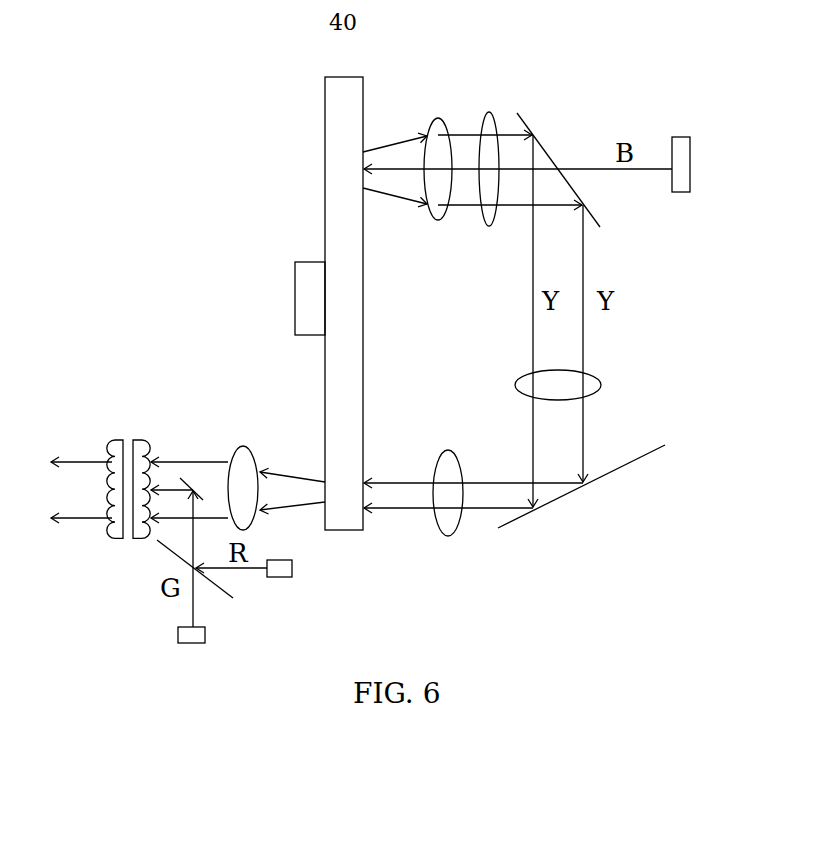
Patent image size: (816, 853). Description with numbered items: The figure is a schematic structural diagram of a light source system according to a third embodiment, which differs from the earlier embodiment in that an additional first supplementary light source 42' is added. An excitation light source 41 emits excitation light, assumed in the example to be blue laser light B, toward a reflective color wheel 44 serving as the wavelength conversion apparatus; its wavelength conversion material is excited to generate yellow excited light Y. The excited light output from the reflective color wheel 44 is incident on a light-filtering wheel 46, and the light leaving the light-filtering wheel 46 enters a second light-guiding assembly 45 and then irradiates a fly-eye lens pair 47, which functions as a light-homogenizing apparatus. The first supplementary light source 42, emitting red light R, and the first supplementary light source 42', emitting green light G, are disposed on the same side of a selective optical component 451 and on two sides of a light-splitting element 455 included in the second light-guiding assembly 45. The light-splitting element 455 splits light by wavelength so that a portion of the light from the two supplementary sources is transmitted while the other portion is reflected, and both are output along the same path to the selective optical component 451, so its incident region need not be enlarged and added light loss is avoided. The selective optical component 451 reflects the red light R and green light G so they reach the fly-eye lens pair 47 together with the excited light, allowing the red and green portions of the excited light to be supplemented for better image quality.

The excitation light source 41 is at (693, 141).
The first supplementary light source 42 is at (306, 557).
The first supplementary light source 42' is at (156, 624).
The reflective color wheel 44 is at (371, 288).
The light-filtering wheel 46 is at (364, 76).
The second light-guiding assembly 45 is at (133, 505).
The fly-eye lens pair 47 is at (138, 437).
The selective optical component 451 is at (197, 497).
The light-splitting element 455 is at (222, 590).